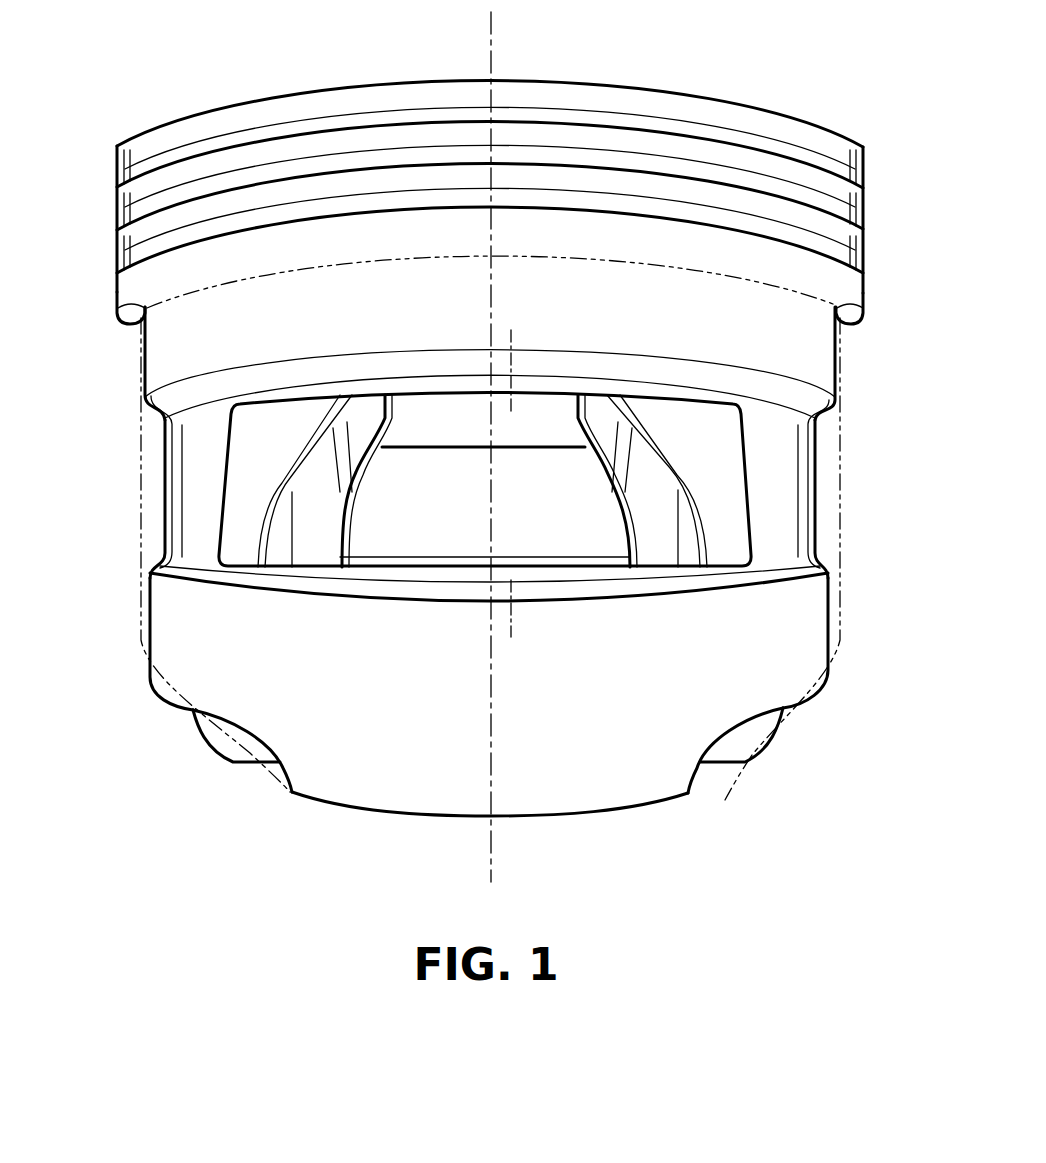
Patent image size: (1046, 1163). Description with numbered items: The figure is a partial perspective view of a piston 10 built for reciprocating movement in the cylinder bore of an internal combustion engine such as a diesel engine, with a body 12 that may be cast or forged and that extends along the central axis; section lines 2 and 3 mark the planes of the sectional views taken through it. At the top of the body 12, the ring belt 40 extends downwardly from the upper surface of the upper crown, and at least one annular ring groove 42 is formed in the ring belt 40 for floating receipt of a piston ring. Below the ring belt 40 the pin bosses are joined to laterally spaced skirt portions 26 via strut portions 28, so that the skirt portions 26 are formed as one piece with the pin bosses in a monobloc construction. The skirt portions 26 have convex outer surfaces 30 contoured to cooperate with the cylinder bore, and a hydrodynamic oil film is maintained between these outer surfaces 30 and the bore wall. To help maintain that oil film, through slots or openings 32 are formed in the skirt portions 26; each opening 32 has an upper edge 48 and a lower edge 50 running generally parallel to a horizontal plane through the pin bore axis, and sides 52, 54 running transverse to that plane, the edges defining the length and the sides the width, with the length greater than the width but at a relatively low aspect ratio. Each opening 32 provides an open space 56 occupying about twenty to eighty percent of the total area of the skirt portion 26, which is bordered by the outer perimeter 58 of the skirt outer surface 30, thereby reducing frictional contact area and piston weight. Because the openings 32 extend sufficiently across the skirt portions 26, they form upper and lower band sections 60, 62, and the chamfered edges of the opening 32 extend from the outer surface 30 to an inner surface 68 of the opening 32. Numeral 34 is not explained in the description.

The section line 2- 2 is at (492, 28).
The section line 3- 3 is at (513, 327).
The piston 10 is at (494, 448).
The body 12 is at (108, 293).
The skirt portions 26 is at (772, 644).
The strut portions 28 is at (192, 482).
The outer surfaces 30 is at (778, 308).
The openings 32 is at (338, 340).
The pin bore web 34 is at (556, 478).
The ring belt 40 is at (92, 200).
The annular ring groove 42 is at (845, 216).
The upper edge 48 is at (385, 352).
The lower edge 50 is at (512, 552).
The side 52 is at (755, 488).
The side 54 is at (230, 443).
The open space 56 is at (553, 532).
The outer perimeter 58 is at (843, 426).
The upper band section 60 is at (800, 358).
The lower band section 62 is at (680, 617).
The inner surface 68 is at (440, 384).